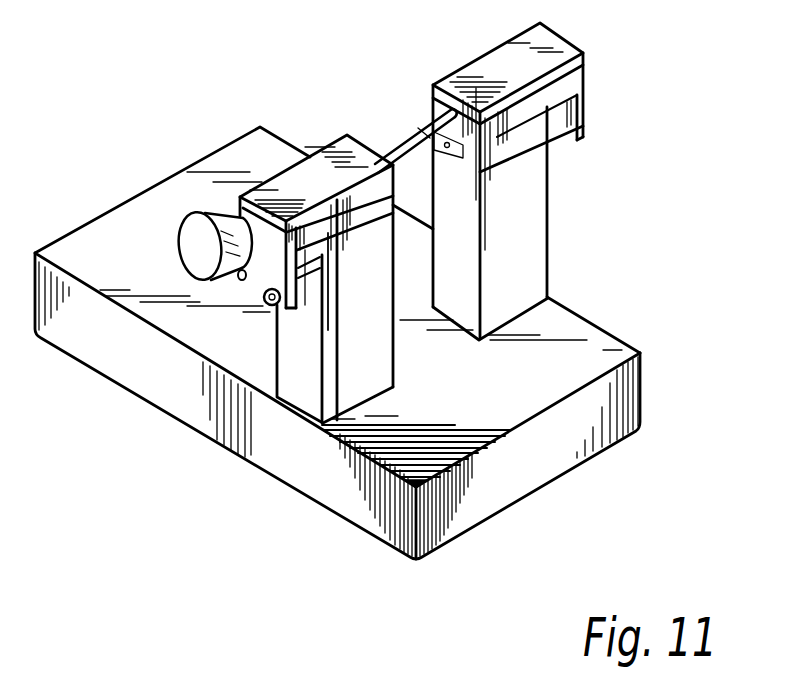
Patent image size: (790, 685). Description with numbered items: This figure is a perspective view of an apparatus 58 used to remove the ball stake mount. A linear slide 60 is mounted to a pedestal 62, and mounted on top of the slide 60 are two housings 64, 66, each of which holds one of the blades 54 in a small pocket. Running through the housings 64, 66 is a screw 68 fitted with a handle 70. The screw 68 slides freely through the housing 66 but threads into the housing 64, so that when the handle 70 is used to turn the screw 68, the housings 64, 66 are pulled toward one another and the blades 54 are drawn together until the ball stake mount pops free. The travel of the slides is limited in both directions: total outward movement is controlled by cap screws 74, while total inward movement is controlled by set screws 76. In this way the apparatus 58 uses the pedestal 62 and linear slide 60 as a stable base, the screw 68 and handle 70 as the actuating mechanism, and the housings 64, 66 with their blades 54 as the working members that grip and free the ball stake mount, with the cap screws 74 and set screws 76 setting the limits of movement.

The apparatus 58 is at (180, 140).
The blades 54 is at (392, 142).
The linear slide 60 is at (371, 247).
The pedestal 62 is at (277, 331).
The housing 64 is at (578, 71).
The housing 66 is at (292, 170).
The screw 68 is at (427, 132).
The handle 70 is at (197, 261).
The cap screws 74 is at (308, 283).
The set screws 76 is at (566, 128).